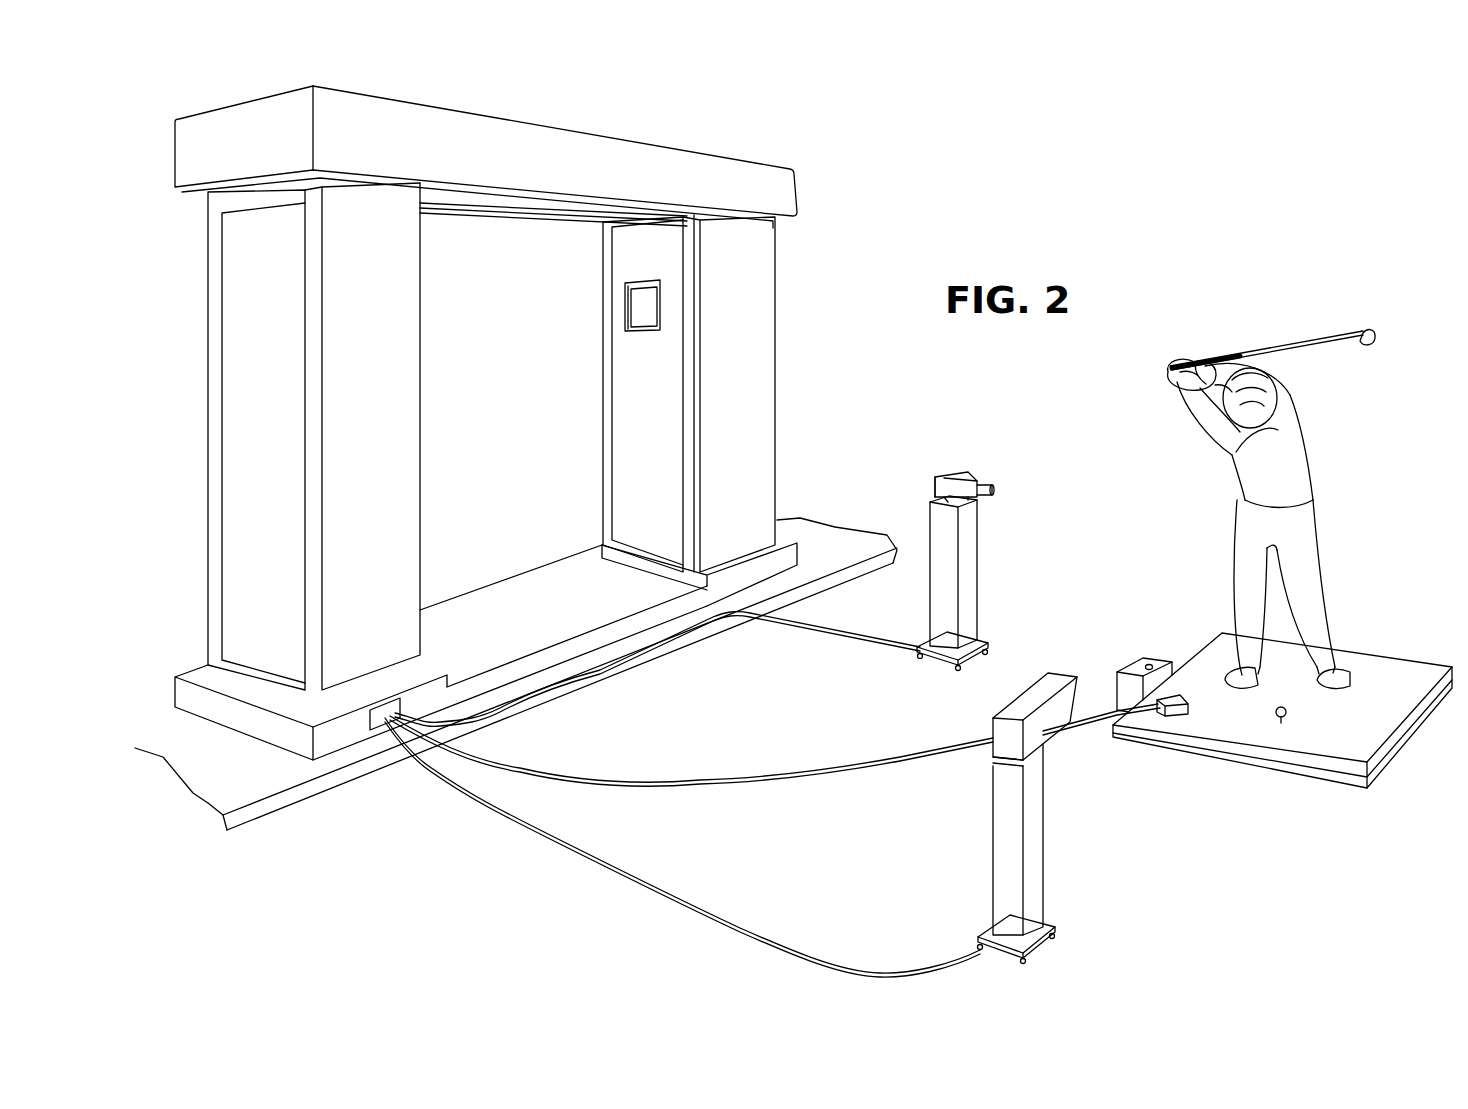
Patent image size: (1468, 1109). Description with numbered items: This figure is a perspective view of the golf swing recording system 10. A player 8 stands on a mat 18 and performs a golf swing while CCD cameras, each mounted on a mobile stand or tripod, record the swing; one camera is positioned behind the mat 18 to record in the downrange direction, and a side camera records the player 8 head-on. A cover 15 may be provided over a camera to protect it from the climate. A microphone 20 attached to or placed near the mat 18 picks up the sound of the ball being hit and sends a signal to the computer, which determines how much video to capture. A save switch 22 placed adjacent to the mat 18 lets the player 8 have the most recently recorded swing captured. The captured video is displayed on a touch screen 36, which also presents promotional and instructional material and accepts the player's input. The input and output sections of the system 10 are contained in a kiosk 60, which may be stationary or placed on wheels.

The player 8 is at (1303, 467).
The system 10 is at (1292, 310).
The cover 15 is at (1035, 677).
The mat 18 is at (1387, 720).
The microphone 20 is at (1178, 716).
The save switch 22 is at (1130, 667).
The touch screen 36 is at (640, 312).
The kiosk 60 is at (810, 201).